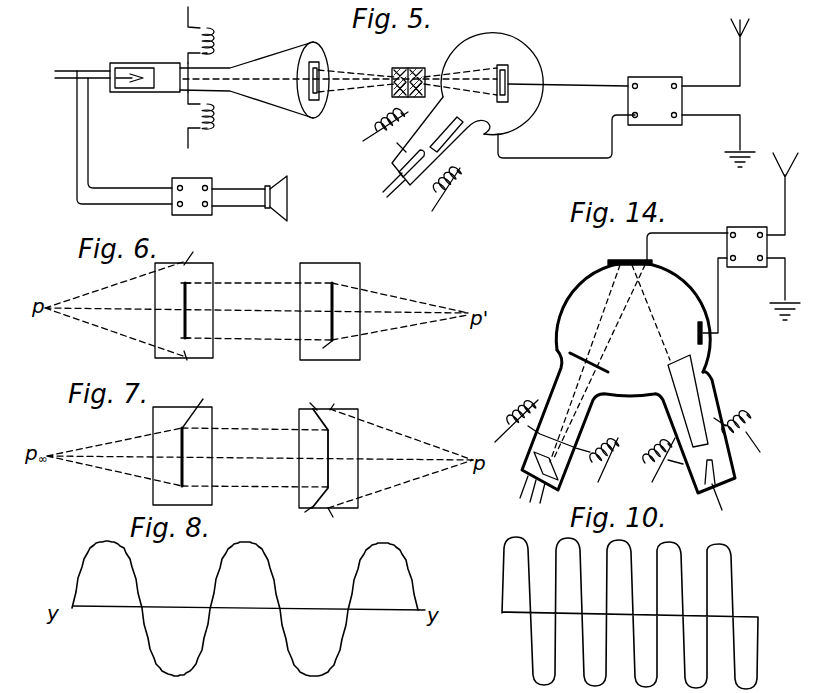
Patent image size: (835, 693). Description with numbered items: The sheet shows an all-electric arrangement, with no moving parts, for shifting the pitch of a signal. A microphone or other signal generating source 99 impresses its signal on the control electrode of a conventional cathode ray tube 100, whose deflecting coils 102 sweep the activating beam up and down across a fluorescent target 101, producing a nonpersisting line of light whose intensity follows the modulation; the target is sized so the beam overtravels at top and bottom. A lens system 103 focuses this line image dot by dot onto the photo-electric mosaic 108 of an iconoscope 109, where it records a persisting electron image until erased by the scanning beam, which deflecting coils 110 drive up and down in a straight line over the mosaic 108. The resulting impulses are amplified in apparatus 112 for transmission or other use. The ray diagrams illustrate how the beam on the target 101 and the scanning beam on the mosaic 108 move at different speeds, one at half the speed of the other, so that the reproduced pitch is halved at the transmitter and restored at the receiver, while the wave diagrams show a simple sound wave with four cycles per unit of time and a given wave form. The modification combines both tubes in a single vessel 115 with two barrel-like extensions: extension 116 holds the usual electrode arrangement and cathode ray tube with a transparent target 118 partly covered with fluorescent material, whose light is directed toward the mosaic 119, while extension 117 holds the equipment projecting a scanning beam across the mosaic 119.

In FIG. 5, the signal generating source 99 is at (272, 185).
In FIG. 5, the cathode ray tube 100 is at (284, 55).
In FIG. 5, the fluorescent target 101 is at (319, 65).
In FIG. 6, the fluorescent target 101 is at (213, 268).
In FIG. 7, the fluorescent target 101 is at (212, 420).
In FIG. 5, the deflecting coils 102 is at (215, 36).
In FIG. 5, the lens system 103 is at (411, 68).
In FIG. 5, the photo-electric mosaic 108 is at (509, 64).
In FIG. 6, the photo-electric mosaic 108 is at (360, 272).
In FIG. 7, the photo-electric mosaic 108 is at (358, 410).
In FIG. 5, the iconoscope 109 is at (511, 35).
In FIG. 5, the deflecting coils 110 is at (382, 118).
In FIG. 5, the amplifying apparatus 112 is at (655, 80).
In FIG. 14, the vessel 115 is at (572, 275).
In FIG. 14, the barrel-like extension 116 is at (557, 386).
In FIG. 14, the barrel-like extension 117 is at (708, 404).
In FIG. 14, the transparent target 118 is at (608, 367).
In FIG. 14, the mosaic 119 is at (617, 260).